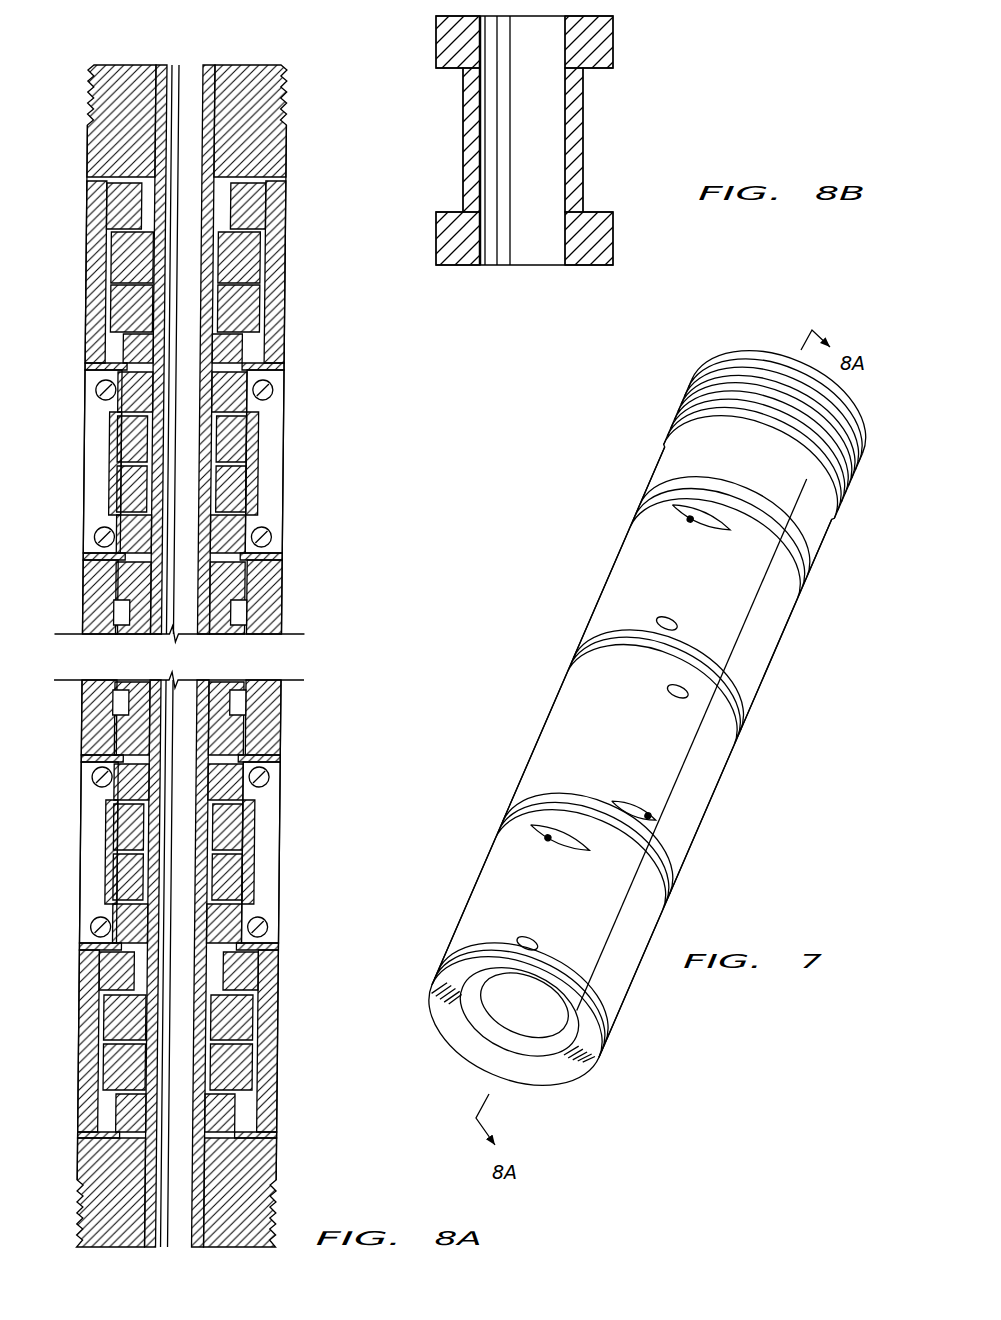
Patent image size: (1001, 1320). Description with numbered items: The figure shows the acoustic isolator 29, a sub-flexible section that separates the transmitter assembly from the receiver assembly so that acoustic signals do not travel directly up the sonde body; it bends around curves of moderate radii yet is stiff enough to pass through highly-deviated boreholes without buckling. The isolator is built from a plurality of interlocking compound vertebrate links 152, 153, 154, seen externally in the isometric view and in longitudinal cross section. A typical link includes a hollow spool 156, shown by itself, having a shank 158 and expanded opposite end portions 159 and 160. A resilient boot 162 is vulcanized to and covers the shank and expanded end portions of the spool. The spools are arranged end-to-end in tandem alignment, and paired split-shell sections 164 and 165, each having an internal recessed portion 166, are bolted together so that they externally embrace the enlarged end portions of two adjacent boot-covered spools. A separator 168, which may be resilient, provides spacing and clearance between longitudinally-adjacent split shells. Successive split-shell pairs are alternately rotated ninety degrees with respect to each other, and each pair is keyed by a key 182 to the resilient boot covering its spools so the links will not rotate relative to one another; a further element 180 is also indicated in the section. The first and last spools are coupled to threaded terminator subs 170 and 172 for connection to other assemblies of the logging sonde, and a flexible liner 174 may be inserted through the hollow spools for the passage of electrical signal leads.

In FIG. 8A, the acoustic isolator 29 is at (334, 502).
In FIG. 7, the acoustic isolator 29 is at (486, 612).
In FIG. 8A, the compound vertebrate link 152 is at (291, 264).
In FIG. 7, the compound vertebrate link 152 is at (617, 562).
In FIG. 8A, the compound vertebrate link 153 is at (287, 431).
In FIG. 7, the compound vertebrate link 153 is at (538, 739).
In FIG. 8A, the compound vertebrate link 154 is at (287, 581).
In FIG. 7, the compound vertebrate link 154 is at (482, 879).
In FIG. 8A, the hollow spool 156 is at (237, 873).
In FIG. 8B, the hollow spool 156 is at (641, 90).
In FIG. 8B, the shank 158 is at (586, 153).
In FIG. 8B, the expanded end portion 159 is at (613, 242).
In FIG. 8B, the expanded end portion 160 is at (614, 36).
In FIG. 8A, the resilient boot 162 is at (244, 954).
In FIG. 8A, the split-shell section 164 is at (273, 628).
In FIG. 7, the split-shell section 164 is at (628, 992).
In FIG. 8A, the split-shell section 165 is at (97, 582).
In FIG. 7, the split-shell section 165 is at (465, 909).
In FIG. 8A, the internal recessed portion 166 is at (258, 807).
In FIG. 8A, the separator 168 is at (277, 762).
In FIG. 8A, the threaded terminator sub 170 is at (281, 1172).
In FIG. 8A, the threaded terminator sub 172 is at (289, 152).
In FIG. 8A, the flexible liner 174 is at (186, 82).
In FIG. 8A, the seal 180 is at (258, 612).
In FIG. 8A, the key 182 is at (108, 689).